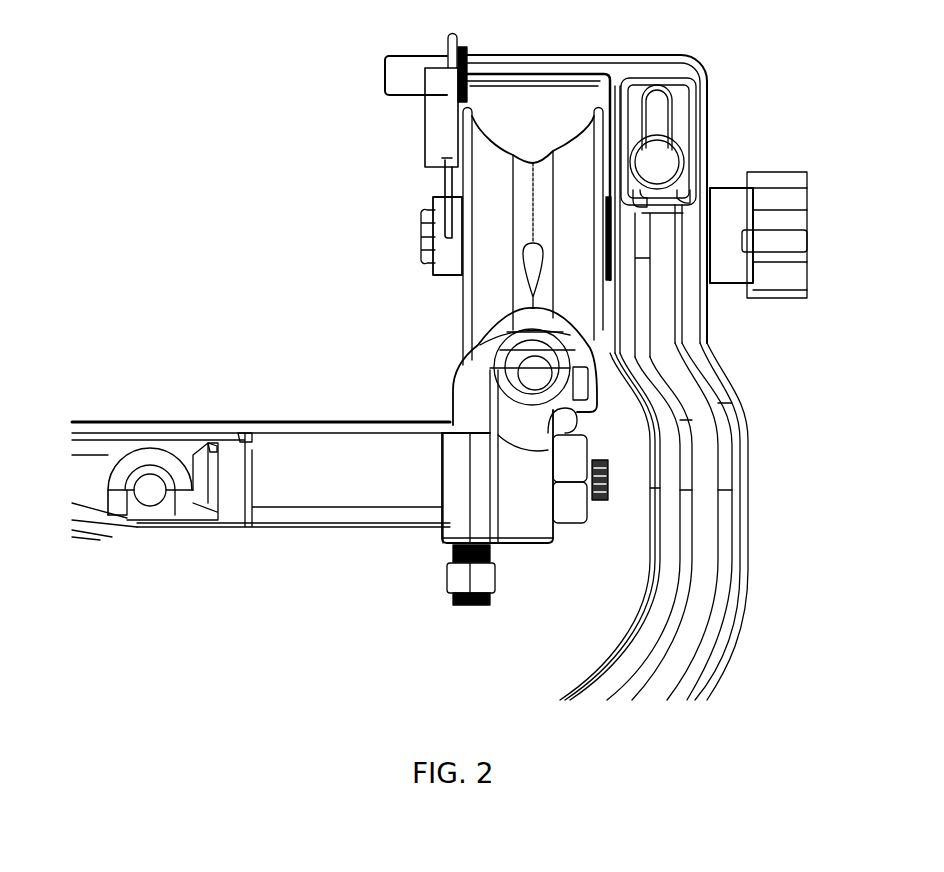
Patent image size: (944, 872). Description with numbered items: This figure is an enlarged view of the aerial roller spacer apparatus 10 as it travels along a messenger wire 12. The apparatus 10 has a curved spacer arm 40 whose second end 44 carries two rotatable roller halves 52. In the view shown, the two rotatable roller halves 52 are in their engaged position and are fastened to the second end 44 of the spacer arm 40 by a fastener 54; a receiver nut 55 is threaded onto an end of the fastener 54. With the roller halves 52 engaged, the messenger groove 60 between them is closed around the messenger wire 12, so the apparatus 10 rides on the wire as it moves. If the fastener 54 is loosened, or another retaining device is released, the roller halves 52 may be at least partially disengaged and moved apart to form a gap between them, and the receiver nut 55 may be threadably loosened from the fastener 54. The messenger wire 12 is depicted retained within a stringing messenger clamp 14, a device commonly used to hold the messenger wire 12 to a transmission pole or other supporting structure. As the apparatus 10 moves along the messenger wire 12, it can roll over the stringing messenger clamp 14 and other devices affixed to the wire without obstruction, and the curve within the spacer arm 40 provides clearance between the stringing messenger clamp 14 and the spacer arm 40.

The aerial roller spacer apparatus 10 is at (826, 60).
The messenger wire 12 is at (540, 380).
The stringing messenger clamp 14 is at (527, 525).
The spacer arm 40 is at (737, 507).
The second end 44 is at (685, 327).
The rotatable roller halves 52 is at (500, 277).
The fastener 54 is at (423, 227).
The receiver nut 55 is at (785, 207).
The messenger groove 60 is at (533, 258).